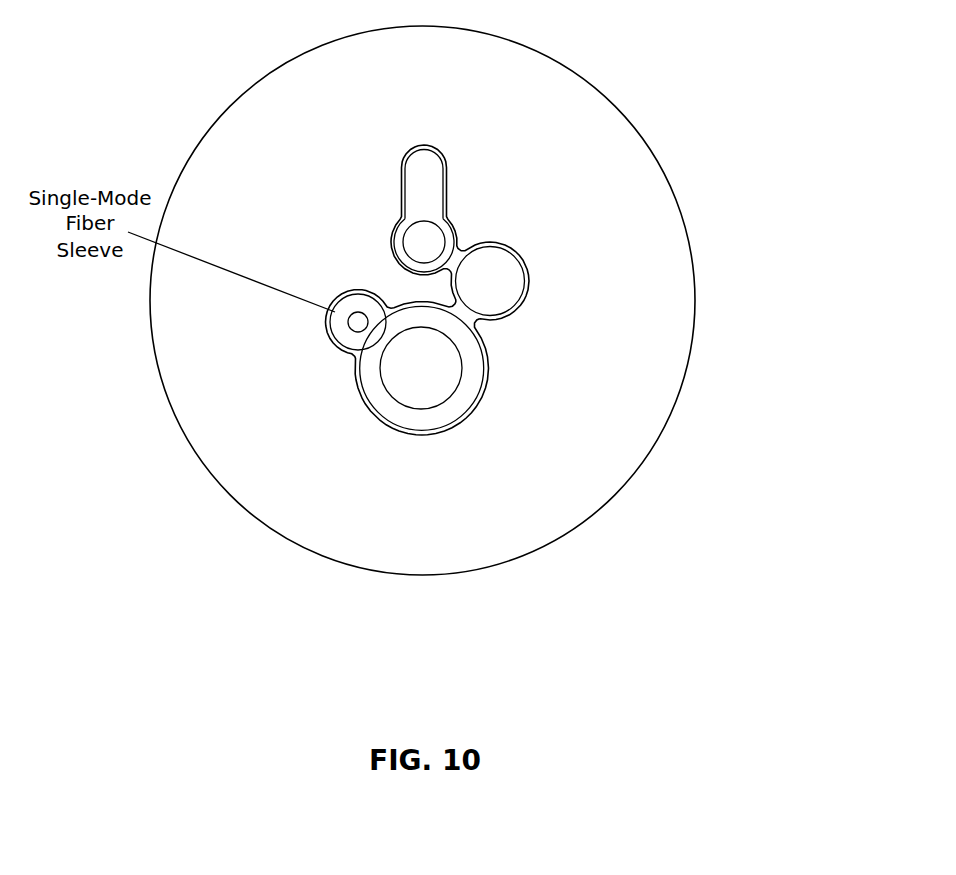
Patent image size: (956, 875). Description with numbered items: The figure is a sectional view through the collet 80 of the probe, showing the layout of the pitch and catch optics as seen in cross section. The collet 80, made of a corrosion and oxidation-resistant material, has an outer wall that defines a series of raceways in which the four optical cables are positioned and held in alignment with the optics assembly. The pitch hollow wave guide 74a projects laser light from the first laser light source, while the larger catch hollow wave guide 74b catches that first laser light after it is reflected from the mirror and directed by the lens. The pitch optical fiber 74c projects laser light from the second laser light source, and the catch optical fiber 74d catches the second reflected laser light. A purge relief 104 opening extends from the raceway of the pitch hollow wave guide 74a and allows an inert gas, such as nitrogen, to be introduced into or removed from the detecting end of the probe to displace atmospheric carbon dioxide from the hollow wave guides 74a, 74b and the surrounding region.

The collet 80 is at (498, 60).
The purge relief 104 is at (427, 162).
The pitch hollow wave guide 74a is at (400, 218).
The catch hollow wave guide 74b is at (460, 393).
The pitch optical fiber 74c is at (355, 325).
The catch optical fiber 74d is at (492, 276).